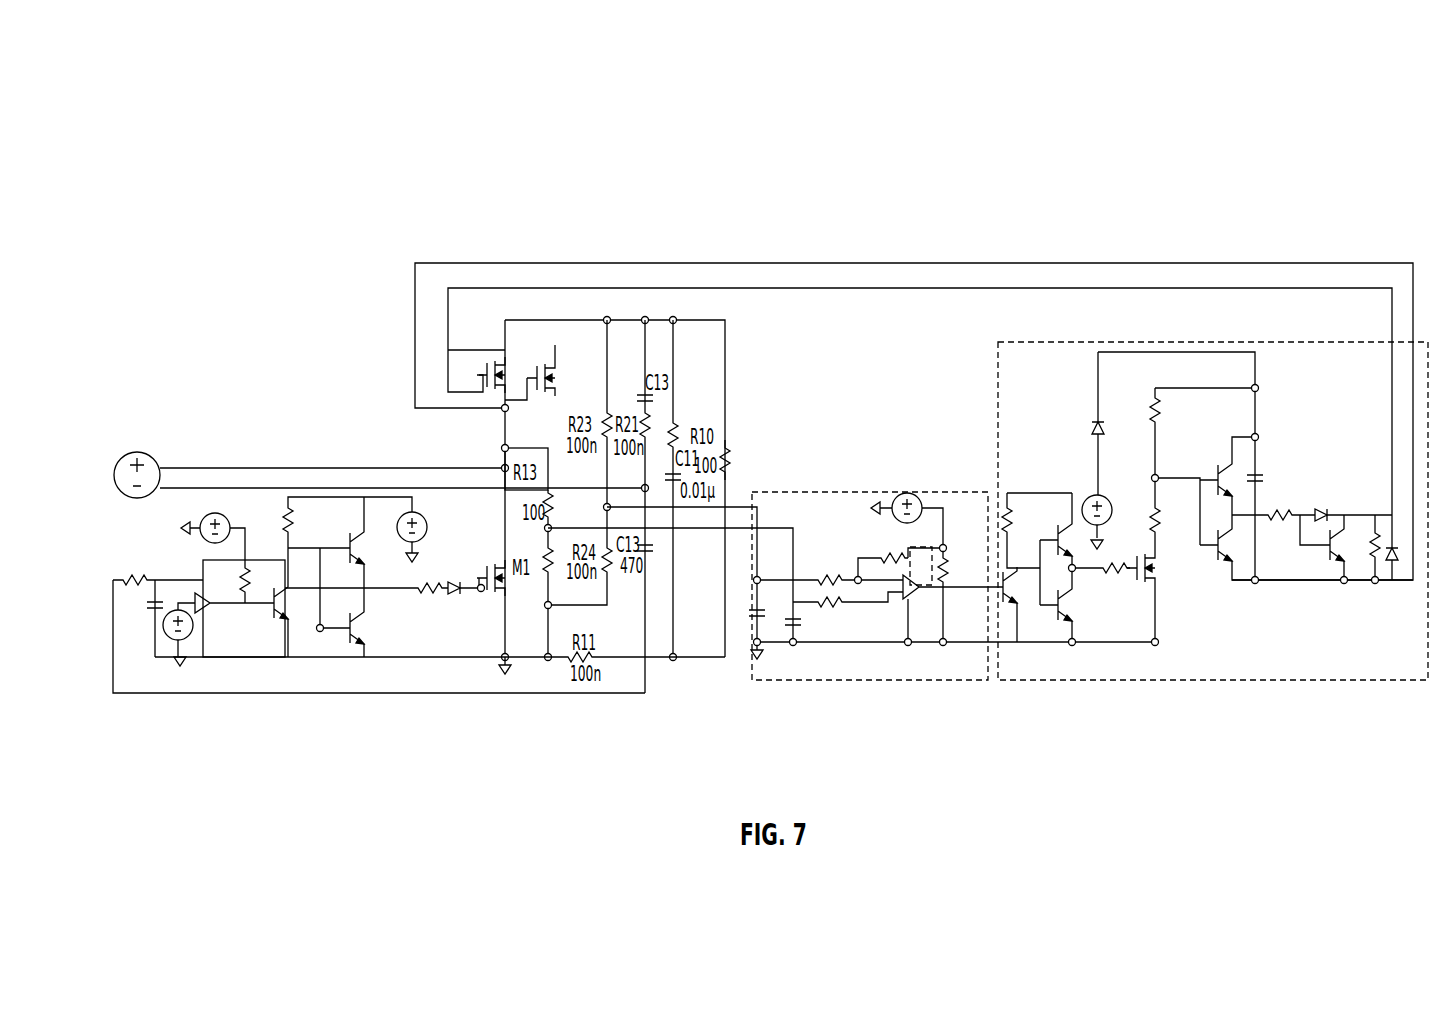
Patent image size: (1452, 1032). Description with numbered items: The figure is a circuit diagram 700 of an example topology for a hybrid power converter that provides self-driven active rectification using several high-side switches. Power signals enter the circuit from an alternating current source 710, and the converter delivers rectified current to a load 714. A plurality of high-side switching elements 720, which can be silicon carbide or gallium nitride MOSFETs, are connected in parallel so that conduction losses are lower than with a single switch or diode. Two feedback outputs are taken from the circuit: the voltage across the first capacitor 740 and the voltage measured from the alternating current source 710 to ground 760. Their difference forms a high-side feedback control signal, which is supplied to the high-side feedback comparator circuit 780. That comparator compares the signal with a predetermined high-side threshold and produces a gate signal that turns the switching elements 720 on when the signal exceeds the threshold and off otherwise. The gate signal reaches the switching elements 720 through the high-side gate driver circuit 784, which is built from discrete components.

The circuit diagram 700 is at (1157, 158).
The alternating current (AC) source 710 is at (138, 447).
The load 714 is at (728, 448).
The high-side switching elements 720 is at (472, 338).
The first capacitor 740 is at (662, 396).
The ground 760 is at (506, 695).
The high-side feedback comparator circuit 780 is at (838, 688).
The high-side gate driver circuit 784 is at (1135, 688).